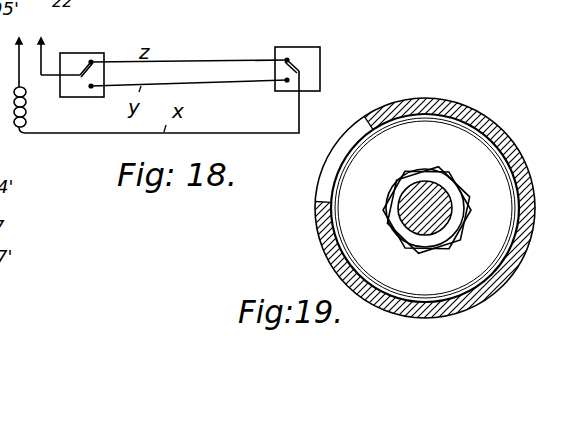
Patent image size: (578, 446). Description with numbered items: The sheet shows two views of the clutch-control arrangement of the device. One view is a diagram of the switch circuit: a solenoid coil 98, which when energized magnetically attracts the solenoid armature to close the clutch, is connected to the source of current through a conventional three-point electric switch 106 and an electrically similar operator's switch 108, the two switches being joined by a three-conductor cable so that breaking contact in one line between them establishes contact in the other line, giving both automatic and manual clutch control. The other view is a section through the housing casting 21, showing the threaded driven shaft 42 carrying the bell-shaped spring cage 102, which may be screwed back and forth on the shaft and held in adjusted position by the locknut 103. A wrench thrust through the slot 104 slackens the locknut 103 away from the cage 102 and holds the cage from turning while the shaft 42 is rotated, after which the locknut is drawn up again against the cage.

In FIG. 18, the solenoid coil 98 is at (28, 113).
In FIG. 18, the three-point electric switch 106 is at (82, 53).
In FIG. 18, the operator's switch 108 is at (313, 63).
In FIG. 19, the casting 21 is at (450, 112).
In FIG. 19, the slot 104 is at (334, 162).
In FIG. 19, the locknut 103 is at (395, 194).
In FIG. 19, the bell-shaped spring cage 102 is at (427, 225).
In FIG. 19, the driven shaft 42 is at (446, 203).